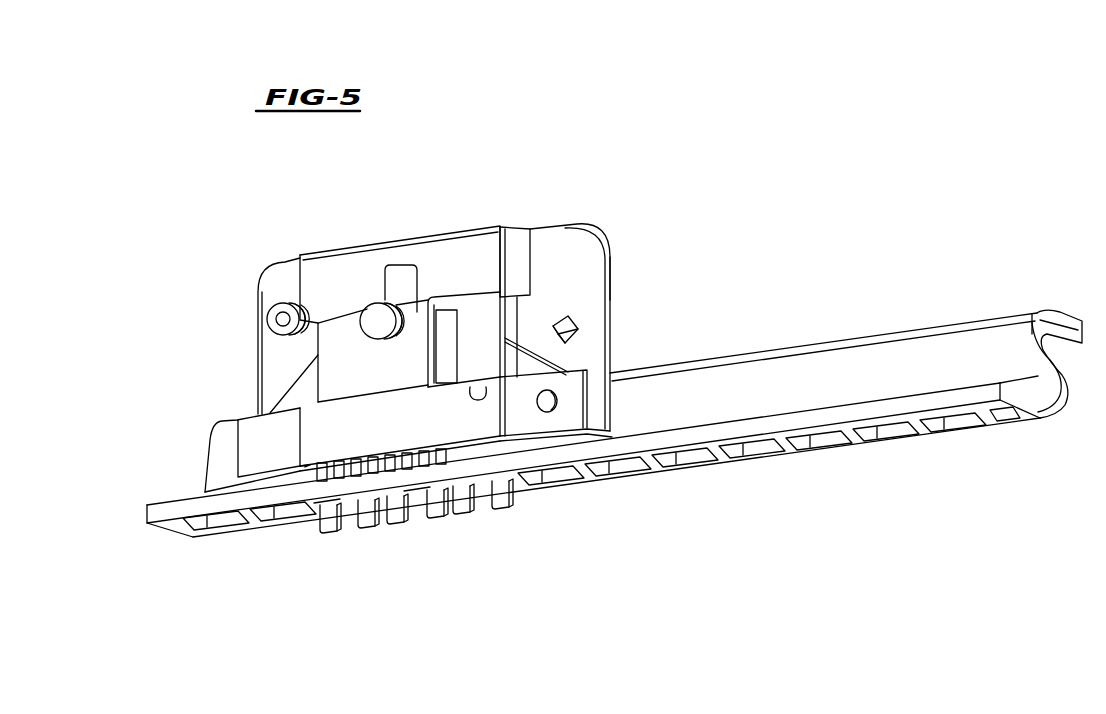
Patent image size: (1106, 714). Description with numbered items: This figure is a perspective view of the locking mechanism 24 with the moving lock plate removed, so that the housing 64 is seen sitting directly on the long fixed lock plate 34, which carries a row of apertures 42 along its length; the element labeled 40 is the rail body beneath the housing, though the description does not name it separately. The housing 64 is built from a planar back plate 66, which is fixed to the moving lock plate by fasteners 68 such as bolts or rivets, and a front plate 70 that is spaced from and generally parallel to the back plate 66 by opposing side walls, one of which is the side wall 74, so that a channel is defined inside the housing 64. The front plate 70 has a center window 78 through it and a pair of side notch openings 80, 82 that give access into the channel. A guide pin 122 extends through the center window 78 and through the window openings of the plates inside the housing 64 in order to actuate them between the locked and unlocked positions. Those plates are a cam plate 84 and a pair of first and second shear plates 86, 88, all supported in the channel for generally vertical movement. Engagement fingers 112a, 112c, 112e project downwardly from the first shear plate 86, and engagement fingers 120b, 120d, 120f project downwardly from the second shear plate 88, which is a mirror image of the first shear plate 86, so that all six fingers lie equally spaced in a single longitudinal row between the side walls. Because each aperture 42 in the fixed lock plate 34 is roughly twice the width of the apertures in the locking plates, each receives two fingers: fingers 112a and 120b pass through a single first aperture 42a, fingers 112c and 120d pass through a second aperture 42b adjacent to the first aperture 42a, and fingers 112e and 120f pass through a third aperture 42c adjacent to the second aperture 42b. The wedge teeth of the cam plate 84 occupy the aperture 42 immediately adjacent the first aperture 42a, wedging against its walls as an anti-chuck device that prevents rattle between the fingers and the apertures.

The locking mechanism 24 is at (722, 157).
The fixed lock plate 34 is at (910, 328).
The rail 40 is at (822, 420).
The apertures 42 is at (268, 519).
The first aperture 42a is at (340, 505).
The second aperture 42b is at (410, 497).
The third aperture 42c is at (472, 497).
The housing 64 is at (600, 236).
The back plate 66 is at (613, 290).
The fasteners 68 is at (276, 314).
The front plate 70 is at (409, 388).
The side wall 74 is at (520, 243).
The center window 78 is at (413, 264).
The side notch opening 80 is at (298, 415).
The side notch opening 82 is at (478, 400).
The cam plate 84 is at (290, 393).
The first shear plate 86 is at (520, 313).
The second shear plate 88 is at (327, 355).
The guide pin 122 is at (375, 312).
The engagement finger 112a is at (332, 535).
The engagement finger 112c is at (398, 528).
The engagement finger 112e is at (468, 518).
The engagement finger 120b is at (366, 532).
The engagement finger 120d is at (437, 522).
The engagement finger 120f is at (505, 512).